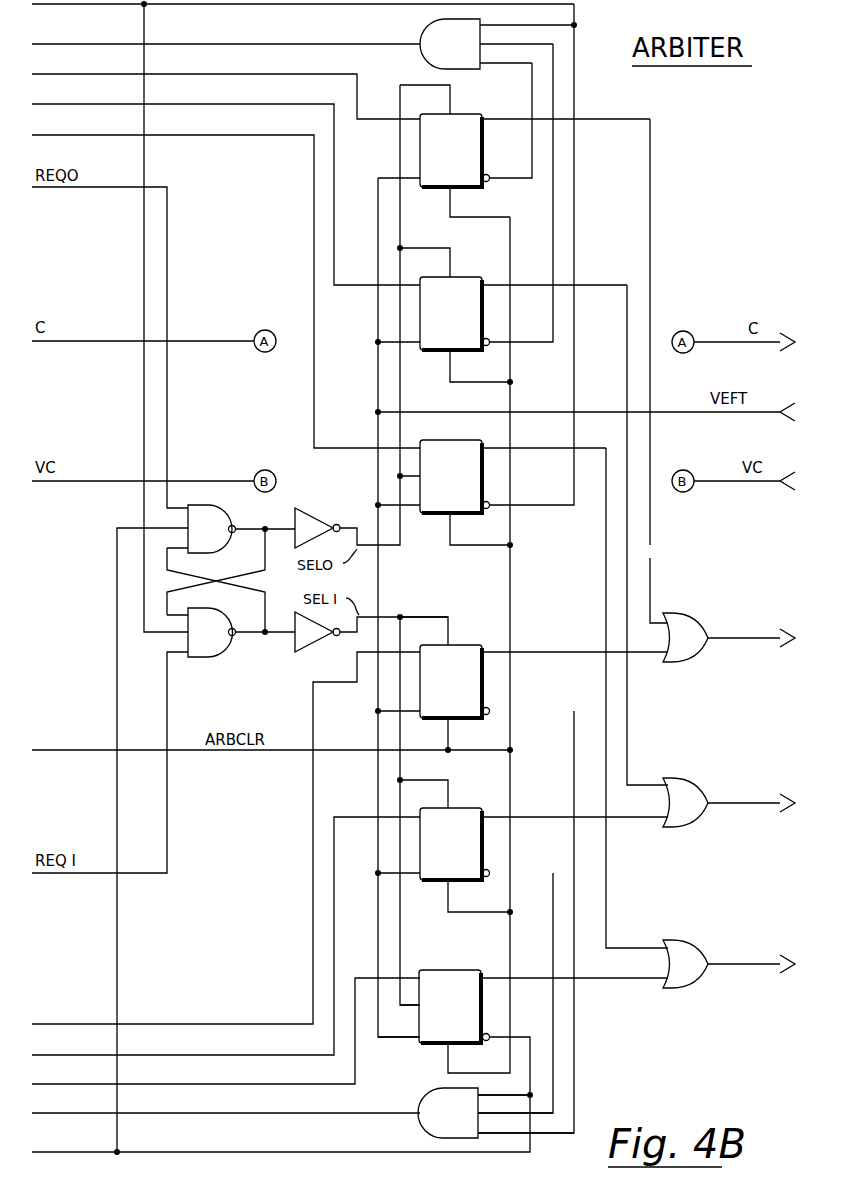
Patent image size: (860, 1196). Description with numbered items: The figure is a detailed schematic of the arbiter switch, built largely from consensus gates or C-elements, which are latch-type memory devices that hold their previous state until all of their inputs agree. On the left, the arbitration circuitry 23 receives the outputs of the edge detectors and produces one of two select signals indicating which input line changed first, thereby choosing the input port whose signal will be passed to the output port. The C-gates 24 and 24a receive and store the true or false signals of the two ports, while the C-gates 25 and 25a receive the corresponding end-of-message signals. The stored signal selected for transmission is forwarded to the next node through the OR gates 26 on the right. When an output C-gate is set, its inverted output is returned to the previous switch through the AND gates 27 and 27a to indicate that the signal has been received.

The arbitration circuitry 23 is at (325, 660).
The C-gate 24 is at (484, 151).
The C-gate 24a is at (484, 683).
The C-gate 25 is at (484, 477).
The C-gate 25a is at (484, 1007).
The OR gate 26 is at (688, 616).
The AND gate 27 is at (423, 35).
The AND gate 27a is at (422, 1092).